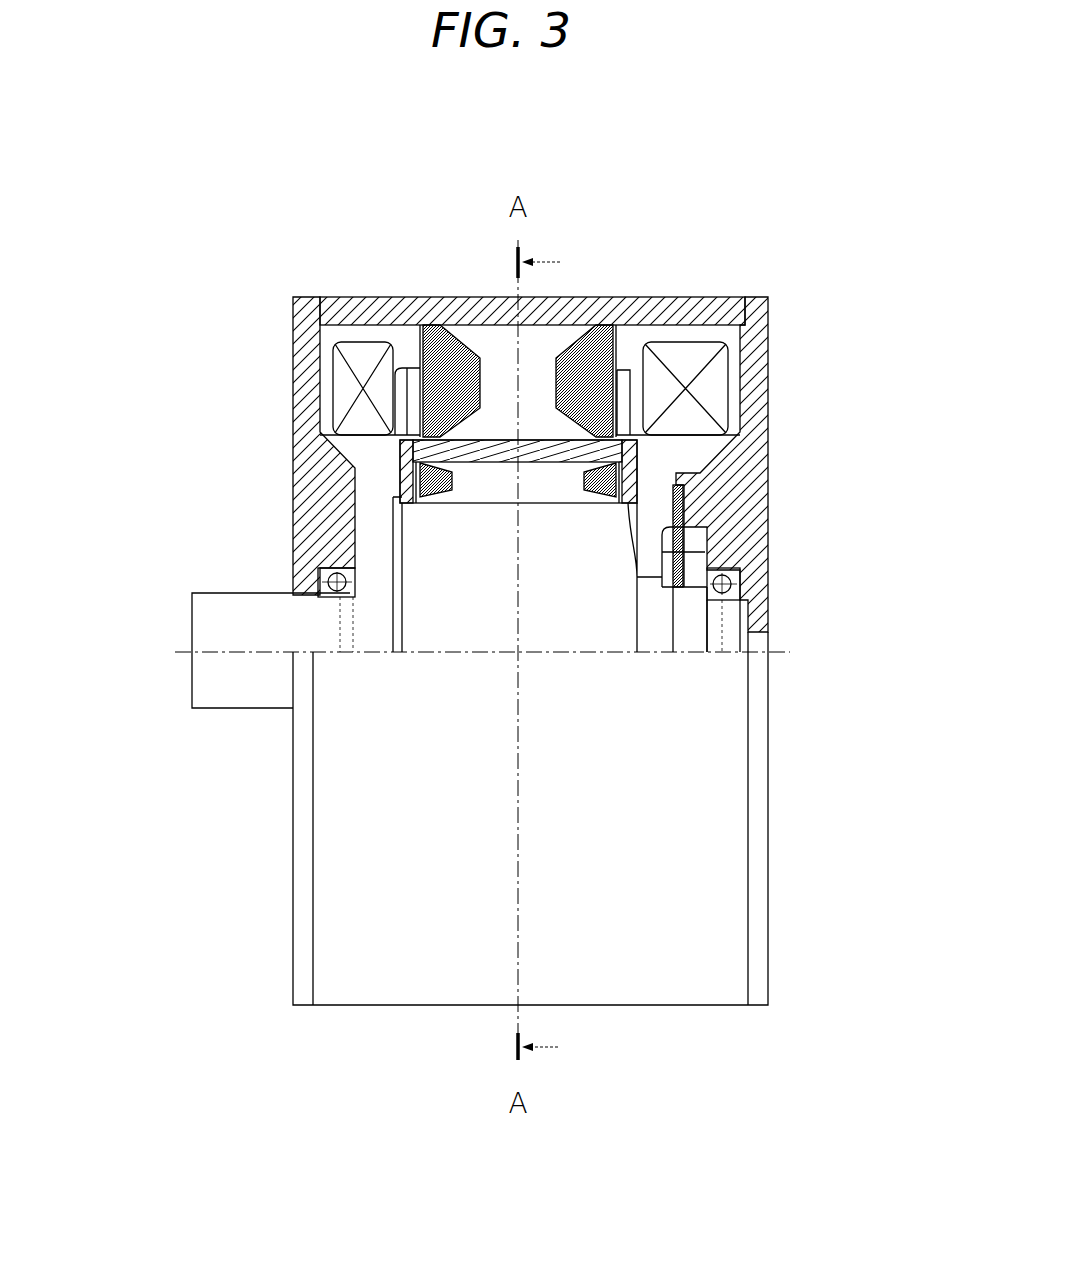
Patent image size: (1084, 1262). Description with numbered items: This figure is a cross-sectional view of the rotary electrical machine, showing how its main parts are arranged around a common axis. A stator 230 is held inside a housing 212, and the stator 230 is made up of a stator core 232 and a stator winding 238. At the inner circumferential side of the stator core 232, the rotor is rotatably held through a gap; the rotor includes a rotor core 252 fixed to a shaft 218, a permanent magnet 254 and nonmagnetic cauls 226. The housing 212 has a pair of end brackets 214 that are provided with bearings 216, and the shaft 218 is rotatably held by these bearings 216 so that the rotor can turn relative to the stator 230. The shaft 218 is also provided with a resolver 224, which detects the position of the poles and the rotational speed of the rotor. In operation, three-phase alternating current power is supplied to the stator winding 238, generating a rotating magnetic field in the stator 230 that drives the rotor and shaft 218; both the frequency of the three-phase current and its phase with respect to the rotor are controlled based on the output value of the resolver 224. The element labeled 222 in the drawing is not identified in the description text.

The housing 212 is at (340, 300).
The end bracket 214 is at (307, 473).
The bearing 216 is at (327, 558).
The shaft 218 is at (220, 602).
The rotor yoke 222 is at (580, 437).
The resolver 224 is at (698, 525).
The nonmagnetic caul 226 is at (397, 588).
The stator 230 is at (440, 330).
The stator core 232 is at (495, 353).
The stator winding 238 is at (352, 390).
The rotor core 252 is at (455, 497).
The permanent magnet 254 is at (533, 462).